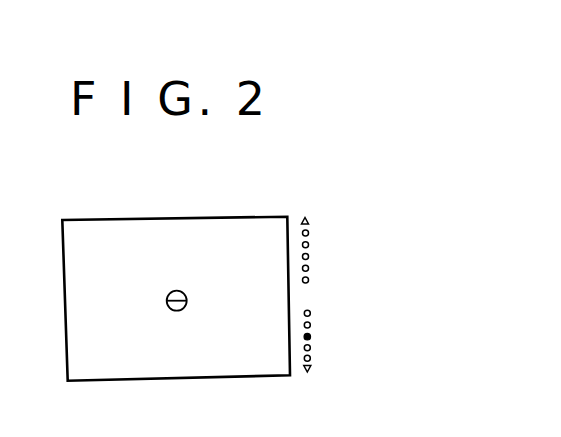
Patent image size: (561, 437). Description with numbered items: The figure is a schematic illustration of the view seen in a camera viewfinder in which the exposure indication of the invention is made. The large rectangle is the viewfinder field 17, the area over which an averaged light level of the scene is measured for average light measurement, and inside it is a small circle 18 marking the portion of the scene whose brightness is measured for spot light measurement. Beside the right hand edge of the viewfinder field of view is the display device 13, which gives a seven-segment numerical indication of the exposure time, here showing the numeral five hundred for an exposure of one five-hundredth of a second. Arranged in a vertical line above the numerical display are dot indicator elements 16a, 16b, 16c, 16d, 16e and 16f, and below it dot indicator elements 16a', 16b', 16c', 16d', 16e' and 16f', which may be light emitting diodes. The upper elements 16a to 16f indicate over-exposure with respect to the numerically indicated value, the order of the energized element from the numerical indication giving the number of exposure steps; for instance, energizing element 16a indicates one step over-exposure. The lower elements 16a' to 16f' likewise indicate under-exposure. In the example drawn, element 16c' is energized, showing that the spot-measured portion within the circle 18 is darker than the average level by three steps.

The viewfinder field 17 is at (227, 216).
The circle 18 is at (184, 293).
The display device 13 is at (333, 292).
The dot indicator element 16a is at (341, 280).
The dot indicator element 16b is at (359, 269).
The dot indicator element 16c is at (337, 257).
The dot indicator element 16d is at (355, 237).
The dot indicator element 16e is at (337, 222).
The dot indicator element 16f is at (334, 203).
The dot indicator element 16a' is at (344, 322).
The dot indicator element 16b' is at (367, 332).
The dot indicator element 16c' is at (345, 348).
The dot indicator element 16d' is at (363, 359).
The dot indicator element 16e' is at (345, 372).
The dot indicator element 16f' is at (343, 392).